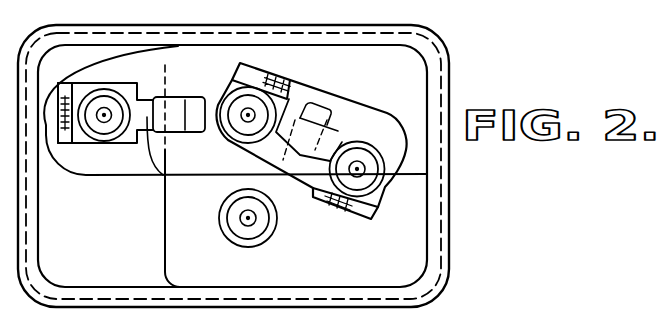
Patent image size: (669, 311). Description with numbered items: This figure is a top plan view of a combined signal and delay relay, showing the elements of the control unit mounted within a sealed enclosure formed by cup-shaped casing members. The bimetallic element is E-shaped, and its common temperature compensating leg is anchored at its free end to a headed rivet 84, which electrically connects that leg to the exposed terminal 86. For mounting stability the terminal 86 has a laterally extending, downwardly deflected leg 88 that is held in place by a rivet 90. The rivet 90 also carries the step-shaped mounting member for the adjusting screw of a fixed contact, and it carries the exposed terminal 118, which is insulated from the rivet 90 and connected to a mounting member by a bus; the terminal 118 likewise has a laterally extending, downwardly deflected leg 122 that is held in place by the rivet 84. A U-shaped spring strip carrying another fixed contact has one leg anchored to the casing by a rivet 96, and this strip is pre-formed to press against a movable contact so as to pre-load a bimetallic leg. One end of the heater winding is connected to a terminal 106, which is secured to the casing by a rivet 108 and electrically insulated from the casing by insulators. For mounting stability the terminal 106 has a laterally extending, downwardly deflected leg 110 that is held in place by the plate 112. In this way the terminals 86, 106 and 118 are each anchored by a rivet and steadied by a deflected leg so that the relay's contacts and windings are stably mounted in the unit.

The headed rivet 84 is at (370, 170).
The exposed terminal 86 is at (366, 217).
The laterally extending downwardly deflected leg 88 is at (330, 133).
The rivet 90 is at (247, 100).
The rivet 96 is at (262, 222).
The terminal 106 is at (72, 84).
The rivet 108 is at (111, 97).
The laterally extending downwardly deflected leg 110 is at (167, 178).
The plate 112 is at (113, 163).
The exposed terminal 118 is at (284, 84).
The laterally extending downwardly deflected leg 122 is at (296, 162).